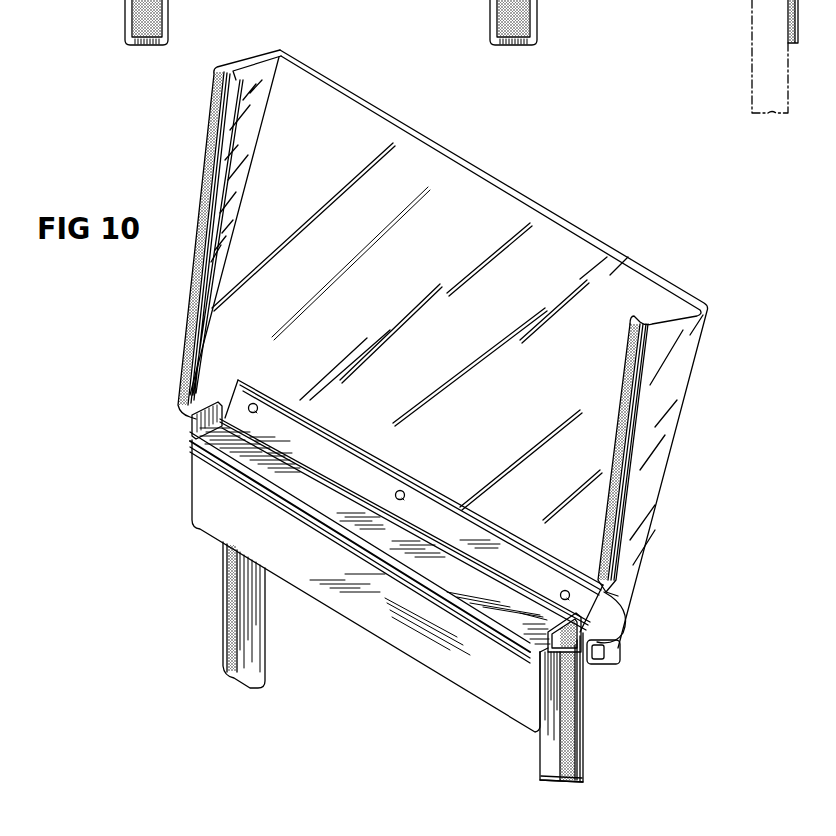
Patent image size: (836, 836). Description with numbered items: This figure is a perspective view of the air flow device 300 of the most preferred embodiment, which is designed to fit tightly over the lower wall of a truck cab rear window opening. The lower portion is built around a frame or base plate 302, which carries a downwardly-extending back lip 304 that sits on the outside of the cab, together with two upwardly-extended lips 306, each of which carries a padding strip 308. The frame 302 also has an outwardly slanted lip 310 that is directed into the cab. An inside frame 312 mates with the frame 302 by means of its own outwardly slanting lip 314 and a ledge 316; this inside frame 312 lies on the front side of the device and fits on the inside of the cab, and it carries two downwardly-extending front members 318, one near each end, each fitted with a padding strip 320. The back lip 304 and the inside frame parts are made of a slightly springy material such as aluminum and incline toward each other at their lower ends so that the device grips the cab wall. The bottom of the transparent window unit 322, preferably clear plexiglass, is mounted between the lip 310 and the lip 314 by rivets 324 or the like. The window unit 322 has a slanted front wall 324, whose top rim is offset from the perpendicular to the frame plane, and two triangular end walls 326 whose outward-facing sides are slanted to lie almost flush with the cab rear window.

The air flow device 300 is at (587, 216).
The frame 302 is at (422, 568).
The downwardly-extending back lip 304 is at (430, 658).
The upwardly-extended lip 306 is at (192, 426).
The padding strip 308 is at (585, 667).
The outwardly slanted lip 310 is at (392, 505).
The inside frame 312 is at (582, 703).
The outwardly slanting lip 314 is at (602, 600).
The ledge 316 is at (606, 654).
The downwardly-extending front member 318 is at (580, 743).
The padding strip 320 is at (580, 780).
The transparent window unit 322 is at (613, 270).
The front wall 324 is at (432, 160).
The end wall 326 is at (255, 68).